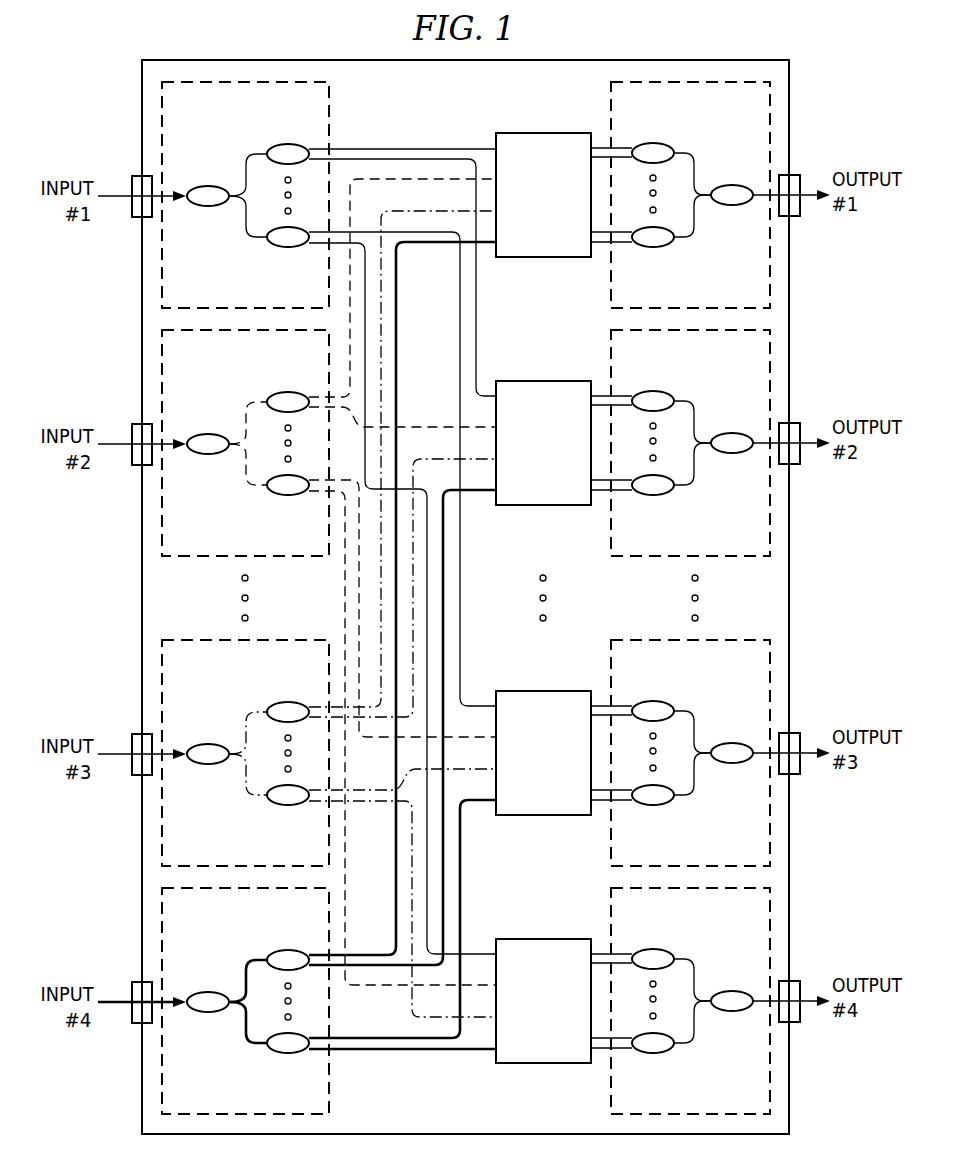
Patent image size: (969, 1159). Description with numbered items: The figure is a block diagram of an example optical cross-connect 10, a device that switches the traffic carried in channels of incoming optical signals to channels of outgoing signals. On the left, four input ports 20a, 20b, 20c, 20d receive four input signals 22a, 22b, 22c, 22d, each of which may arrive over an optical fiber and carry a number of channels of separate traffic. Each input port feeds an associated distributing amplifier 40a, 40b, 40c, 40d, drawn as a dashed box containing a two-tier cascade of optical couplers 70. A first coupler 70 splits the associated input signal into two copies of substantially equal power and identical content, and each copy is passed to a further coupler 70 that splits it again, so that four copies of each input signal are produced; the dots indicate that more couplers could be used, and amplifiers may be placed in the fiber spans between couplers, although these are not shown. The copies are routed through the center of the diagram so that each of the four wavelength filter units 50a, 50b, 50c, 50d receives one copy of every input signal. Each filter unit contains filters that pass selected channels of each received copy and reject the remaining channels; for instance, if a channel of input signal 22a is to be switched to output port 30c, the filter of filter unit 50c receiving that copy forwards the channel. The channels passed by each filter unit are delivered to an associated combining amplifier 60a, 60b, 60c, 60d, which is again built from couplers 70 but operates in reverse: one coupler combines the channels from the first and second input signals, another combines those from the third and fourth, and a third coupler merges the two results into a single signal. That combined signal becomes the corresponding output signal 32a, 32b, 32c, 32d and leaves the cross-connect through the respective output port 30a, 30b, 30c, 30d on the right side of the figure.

The optical cross-connect 10 is at (274, 56).
The input port 20a is at (132, 206).
The input port 20b is at (132, 454).
The input port 20c is at (132, 764).
The input port 20d is at (132, 1012).
The input signal 22a is at (130, 191).
The input signal 22b is at (130, 439).
The input signal 22c is at (130, 749).
The input signal 22d is at (130, 997).
The output port 30a is at (802, 204).
The output port 30b is at (802, 452).
The output port 30c is at (802, 762).
The output port 30d is at (802, 1010).
The output signal 32a is at (802, 189).
The output signal 32b is at (802, 437).
The output signal 32c is at (802, 747).
The output signal 32d is at (802, 995).
The distributing amplifier 40a is at (194, 292).
The distributing amplifier 40b is at (194, 540).
The distributing amplifier 40c is at (194, 850).
The distributing amplifier 40d is at (194, 1098).
The wavelength filter unit 50a is at (525, 236).
The wavelength filter unit 50b is at (525, 484).
The wavelength filter unit 50c is at (525, 794).
The wavelength filter unit 50d is at (525, 1042).
The combining amplifier 60a is at (716, 290).
The combining amplifier 60b is at (716, 538).
The combining amplifier 60c is at (716, 848).
The combining amplifier 60d is at (716, 1096).
The optical coupler 70 is at (208, 185).